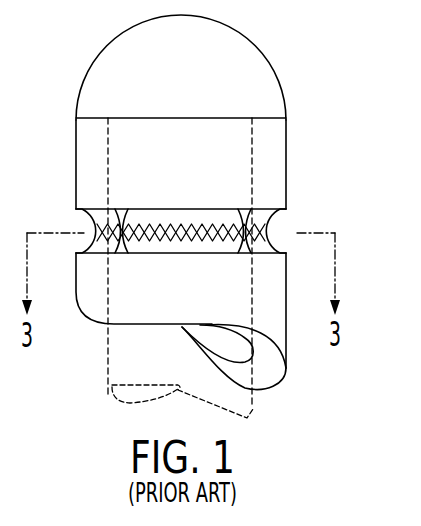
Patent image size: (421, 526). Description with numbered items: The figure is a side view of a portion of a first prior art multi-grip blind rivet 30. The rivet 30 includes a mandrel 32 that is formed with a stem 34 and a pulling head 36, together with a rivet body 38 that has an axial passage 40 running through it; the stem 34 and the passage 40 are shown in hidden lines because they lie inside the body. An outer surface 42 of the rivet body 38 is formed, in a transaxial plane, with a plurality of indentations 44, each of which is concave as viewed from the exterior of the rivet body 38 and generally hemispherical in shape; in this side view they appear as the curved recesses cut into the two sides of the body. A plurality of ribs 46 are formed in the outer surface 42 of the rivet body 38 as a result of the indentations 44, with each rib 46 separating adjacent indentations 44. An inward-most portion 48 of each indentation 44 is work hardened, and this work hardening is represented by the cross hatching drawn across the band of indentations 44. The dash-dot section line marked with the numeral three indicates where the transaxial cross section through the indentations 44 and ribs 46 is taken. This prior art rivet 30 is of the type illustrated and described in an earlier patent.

The multi-grip blind rivet 30 is at (192, 223).
The mandrel 32 is at (109, 372).
The stem 34 is at (253, 409).
The pulling head 36 is at (281, 101).
The rivet body 38 is at (190, 262).
The axial passage 40 is at (109, 158).
The outer surface 42 is at (80, 182).
The indentations 44 is at (286, 218).
The ribs 46 is at (122, 210).
The inward-most portion 48 is at (188, 225).